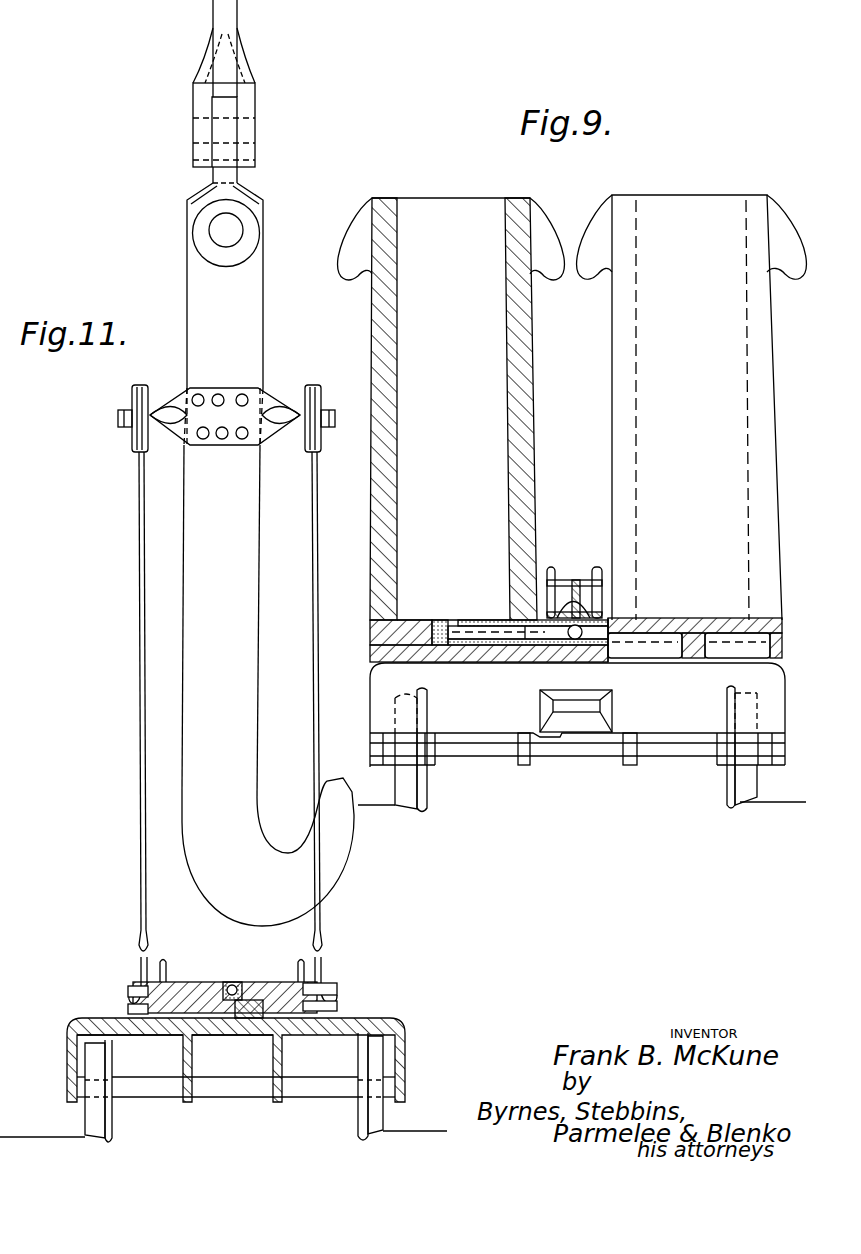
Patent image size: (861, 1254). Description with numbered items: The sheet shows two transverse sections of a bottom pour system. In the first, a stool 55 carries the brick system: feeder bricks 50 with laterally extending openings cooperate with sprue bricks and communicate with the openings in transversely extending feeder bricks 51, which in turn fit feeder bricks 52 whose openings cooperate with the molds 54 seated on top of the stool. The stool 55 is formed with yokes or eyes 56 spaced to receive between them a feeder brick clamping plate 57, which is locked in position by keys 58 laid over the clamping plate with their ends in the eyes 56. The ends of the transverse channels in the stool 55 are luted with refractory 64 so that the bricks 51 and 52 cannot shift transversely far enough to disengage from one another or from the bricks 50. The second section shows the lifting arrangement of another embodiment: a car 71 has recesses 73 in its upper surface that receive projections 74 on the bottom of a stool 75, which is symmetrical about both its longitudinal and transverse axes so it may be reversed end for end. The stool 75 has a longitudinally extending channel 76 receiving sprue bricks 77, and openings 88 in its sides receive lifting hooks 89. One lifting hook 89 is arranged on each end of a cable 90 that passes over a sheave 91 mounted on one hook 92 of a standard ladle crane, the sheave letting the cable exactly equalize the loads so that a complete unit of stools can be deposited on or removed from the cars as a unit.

In FIG. 9, the feeder brick 50 is at (603, 615).
In FIG. 9, the feeder brick 51 is at (542, 641).
In FIG. 9, the feeder brick 52 is at (476, 647).
In FIG. 9, the mold 54 is at (528, 473).
In FIG. 9, the stool 55 is at (750, 632).
In FIG. 9, the yoke or eye 56 is at (596, 568).
In FIG. 9, the feeder brick clamping plate 57 is at (573, 582).
In FIG. 9, the key 58 is at (602, 583).
In FIG. 9, the refractory 64 is at (433, 620).
In FIG. 11, the car 71 is at (403, 1022).
In FIG. 11, the recess 73 is at (213, 1034).
In FIG. 11, the projection 74 is at (242, 1018).
In FIG. 11, the stool 75 is at (323, 990).
In FIG. 11, the channel 76 is at (243, 981).
In FIG. 11, the sprue brick 77 is at (222, 982).
In FIG. 11, the opening 88 is at (164, 962).
In FIG. 11, the lifting hook 89 is at (138, 962).
In FIG. 11, the cable 90 is at (141, 830).
In FIG. 11, the sheave 91 is at (132, 442).
In FIG. 11, the hook 92 is at (238, 667).